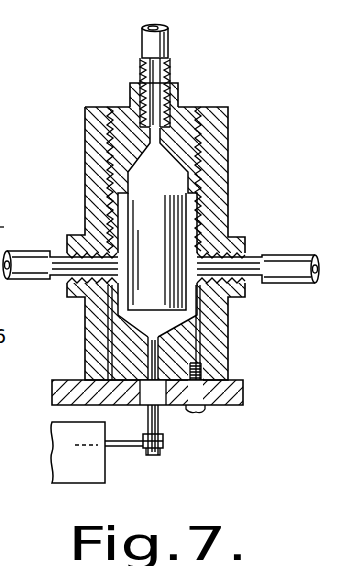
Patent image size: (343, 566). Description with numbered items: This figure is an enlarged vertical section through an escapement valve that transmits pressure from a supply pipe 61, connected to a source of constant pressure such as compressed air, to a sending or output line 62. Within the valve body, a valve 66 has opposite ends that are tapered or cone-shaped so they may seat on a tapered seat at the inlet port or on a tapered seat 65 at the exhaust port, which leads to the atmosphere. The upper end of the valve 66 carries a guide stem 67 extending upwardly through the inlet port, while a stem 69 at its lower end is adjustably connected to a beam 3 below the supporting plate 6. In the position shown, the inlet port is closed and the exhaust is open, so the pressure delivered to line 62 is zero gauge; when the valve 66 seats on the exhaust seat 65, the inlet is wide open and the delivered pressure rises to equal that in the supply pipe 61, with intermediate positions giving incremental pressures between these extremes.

The supply pipe 61 is at (168, 42).
The guide stem 67 is at (178, 103).
The valve 66 is at (178, 222).
The sending or output line 62 is at (273, 285).
The tapered seat 65 is at (178, 334).
The base plate 6 is at (243, 398).
The stem 69 is at (158, 423).
The support member 3 is at (92, 468).